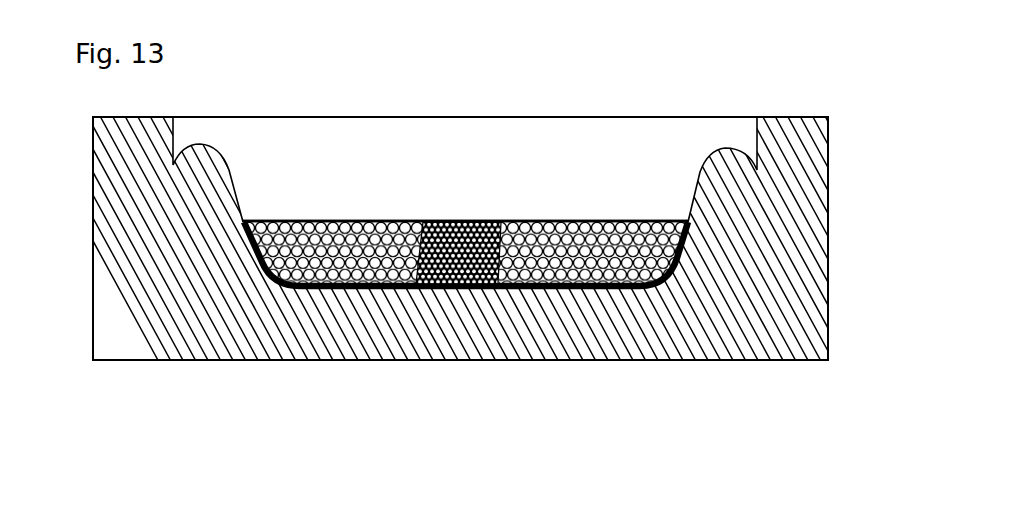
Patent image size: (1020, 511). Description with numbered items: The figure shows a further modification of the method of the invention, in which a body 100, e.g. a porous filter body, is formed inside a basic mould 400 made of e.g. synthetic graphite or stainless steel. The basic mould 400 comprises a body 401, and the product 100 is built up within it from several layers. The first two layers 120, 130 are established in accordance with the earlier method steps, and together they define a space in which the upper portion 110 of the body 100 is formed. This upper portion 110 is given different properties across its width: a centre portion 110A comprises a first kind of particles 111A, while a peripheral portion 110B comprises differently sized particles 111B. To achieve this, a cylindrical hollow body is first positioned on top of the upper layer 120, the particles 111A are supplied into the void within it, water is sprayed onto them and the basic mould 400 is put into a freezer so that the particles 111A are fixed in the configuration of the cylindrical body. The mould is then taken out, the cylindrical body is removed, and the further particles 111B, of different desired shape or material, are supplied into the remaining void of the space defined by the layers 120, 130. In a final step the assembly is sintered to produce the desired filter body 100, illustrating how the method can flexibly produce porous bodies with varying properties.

The basic mould 400 is at (100, 385).
The body 401 is at (735, 333).
The product 100 is at (262, 298).
The upper portion 110 is at (475, 235).
The central resin portion 110A is at (456, 222).
The peripheral portion 110B is at (570, 222).
The first kind of particles 111A is at (485, 222).
The further particles 111B is at (369, 222).
The upper layer 120 is at (563, 265).
The layer 130 is at (566, 292).